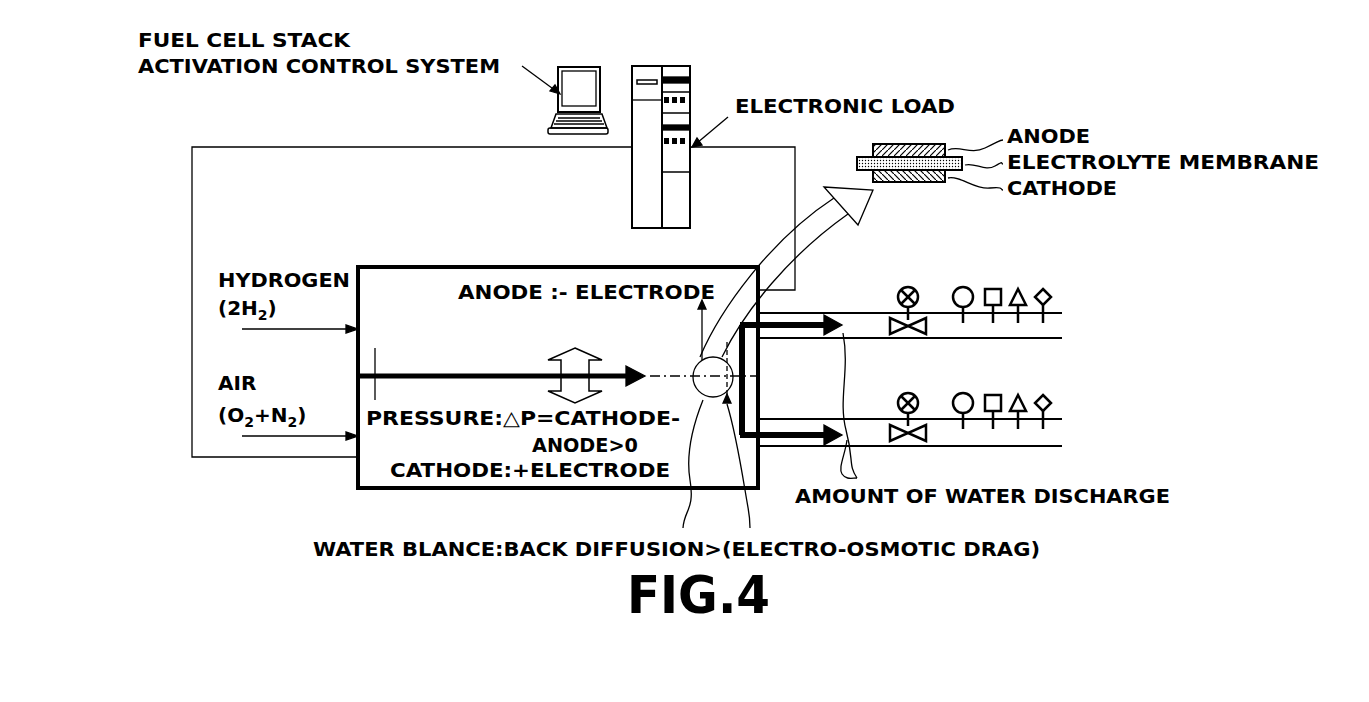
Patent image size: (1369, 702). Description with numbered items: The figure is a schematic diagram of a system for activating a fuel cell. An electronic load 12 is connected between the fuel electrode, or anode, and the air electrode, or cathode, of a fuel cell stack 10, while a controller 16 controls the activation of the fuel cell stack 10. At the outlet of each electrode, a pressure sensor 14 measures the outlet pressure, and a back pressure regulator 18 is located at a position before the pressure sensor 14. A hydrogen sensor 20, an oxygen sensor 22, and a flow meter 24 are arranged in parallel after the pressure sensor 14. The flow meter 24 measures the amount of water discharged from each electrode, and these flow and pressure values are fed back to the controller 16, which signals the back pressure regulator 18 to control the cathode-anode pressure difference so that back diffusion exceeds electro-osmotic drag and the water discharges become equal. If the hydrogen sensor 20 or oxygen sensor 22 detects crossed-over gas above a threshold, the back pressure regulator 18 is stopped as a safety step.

The fuel cell stack 10 is at (497, 267).
The electronic load 12 is at (690, 85).
The pressure sensor 14 is at (963, 287).
The controller 16 is at (578, 66).
The back pressure regulator 18 is at (912, 287).
The hydrogen sensor 20 is at (993, 289).
The oxygen sensor 22 is at (1018, 289).
The flow meter 24 is at (1043, 289).